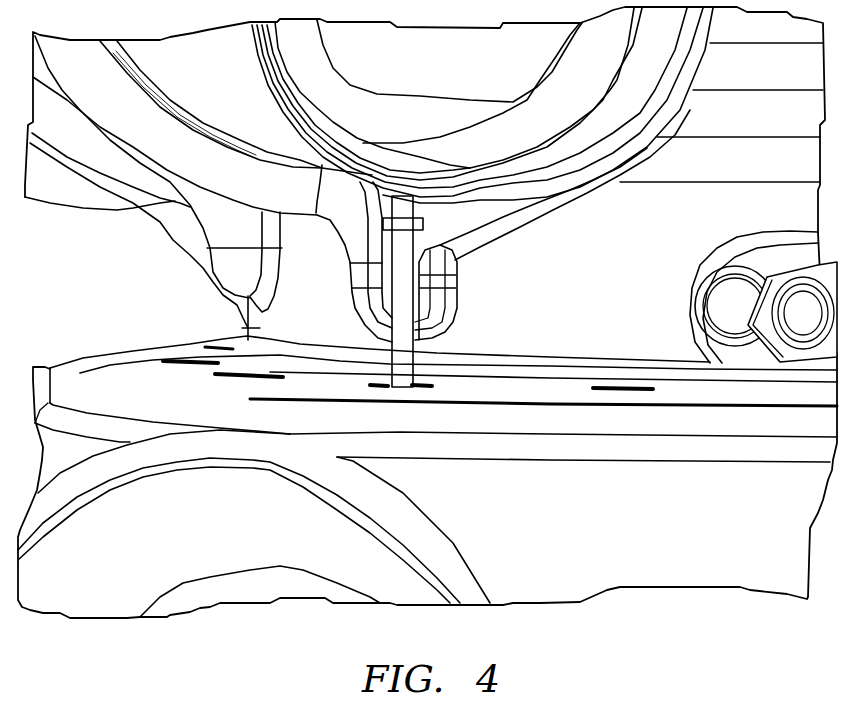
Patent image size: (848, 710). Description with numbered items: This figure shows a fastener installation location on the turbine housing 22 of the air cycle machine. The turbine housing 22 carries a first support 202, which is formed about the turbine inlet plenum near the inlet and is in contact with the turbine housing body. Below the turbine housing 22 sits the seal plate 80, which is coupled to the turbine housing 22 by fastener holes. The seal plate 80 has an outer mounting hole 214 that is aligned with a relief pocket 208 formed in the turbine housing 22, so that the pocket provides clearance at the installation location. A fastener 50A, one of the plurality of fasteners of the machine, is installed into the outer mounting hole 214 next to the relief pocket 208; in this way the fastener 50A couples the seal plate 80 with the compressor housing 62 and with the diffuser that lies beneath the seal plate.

The first support 202 is at (198, 182).
The turbine housing 22 is at (216, 252).
The seal plate 80 is at (432, 379).
The fastener 50A is at (427, 284).
The relief pocket 208 is at (565, 204).
The outer mounting hole 214 is at (543, 445).
The compressor housing 62 is at (360, 549).